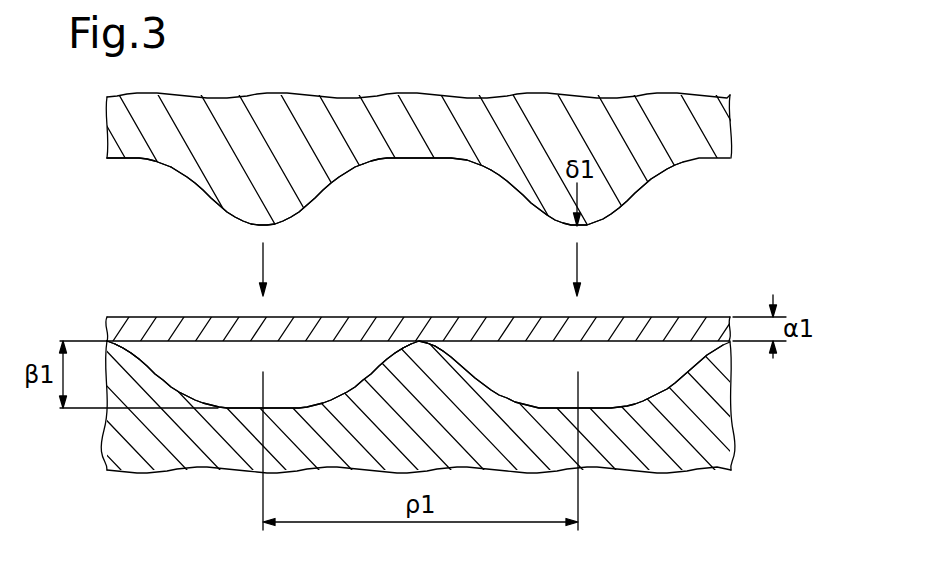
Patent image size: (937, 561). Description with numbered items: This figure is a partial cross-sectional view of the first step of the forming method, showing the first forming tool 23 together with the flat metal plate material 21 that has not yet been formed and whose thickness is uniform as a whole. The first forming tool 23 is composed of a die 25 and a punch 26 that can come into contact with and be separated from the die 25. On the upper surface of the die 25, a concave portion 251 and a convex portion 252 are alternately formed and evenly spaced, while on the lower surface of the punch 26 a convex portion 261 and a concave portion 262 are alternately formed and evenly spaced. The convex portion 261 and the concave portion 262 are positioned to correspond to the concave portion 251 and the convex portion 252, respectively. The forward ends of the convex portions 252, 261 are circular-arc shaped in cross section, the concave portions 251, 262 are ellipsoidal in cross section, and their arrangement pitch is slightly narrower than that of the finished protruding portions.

The first forming tool 23 is at (731, 96).
The punch 26 is at (731, 140).
The concave portion 262 is at (157, 162).
The convex portion 261 is at (271, 226).
The metal plate material 21 is at (458, 316).
The die 25 is at (727, 397).
The concave portion 251 is at (282, 408).
The convex portion 252 is at (115, 346).